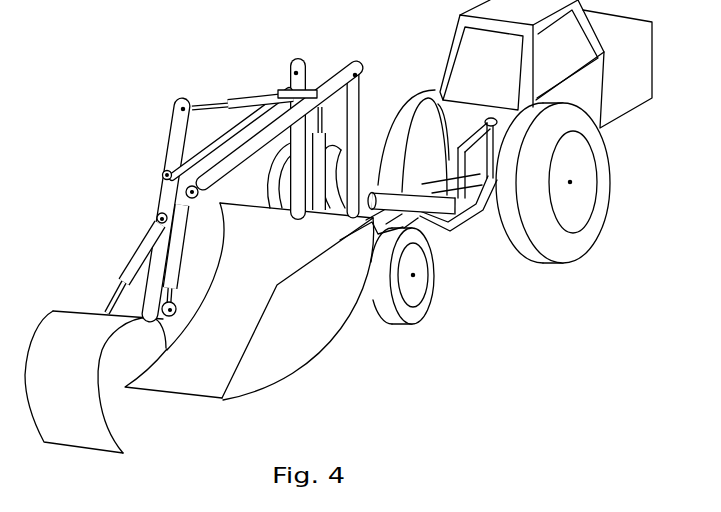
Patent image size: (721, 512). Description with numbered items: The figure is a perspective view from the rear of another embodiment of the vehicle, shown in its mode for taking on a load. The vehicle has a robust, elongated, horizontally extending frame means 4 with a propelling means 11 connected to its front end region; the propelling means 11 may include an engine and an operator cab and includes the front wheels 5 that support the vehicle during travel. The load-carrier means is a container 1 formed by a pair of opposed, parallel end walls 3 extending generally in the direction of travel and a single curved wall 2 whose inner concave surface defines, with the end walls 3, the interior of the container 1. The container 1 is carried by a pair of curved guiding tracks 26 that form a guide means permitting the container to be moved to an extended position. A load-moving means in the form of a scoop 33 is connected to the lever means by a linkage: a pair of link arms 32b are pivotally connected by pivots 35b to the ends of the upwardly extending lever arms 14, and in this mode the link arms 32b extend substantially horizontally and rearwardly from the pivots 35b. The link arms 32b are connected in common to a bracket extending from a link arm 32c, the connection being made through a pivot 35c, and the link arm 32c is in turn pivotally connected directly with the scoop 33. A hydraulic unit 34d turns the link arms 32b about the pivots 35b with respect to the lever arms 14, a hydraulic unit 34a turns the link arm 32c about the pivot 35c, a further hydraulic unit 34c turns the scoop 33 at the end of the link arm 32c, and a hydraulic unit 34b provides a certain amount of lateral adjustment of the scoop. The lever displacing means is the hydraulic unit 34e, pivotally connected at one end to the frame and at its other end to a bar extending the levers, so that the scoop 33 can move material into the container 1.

The container 1 is at (315, 317).
The curved wall 2 is at (185, 388).
The end walls 3 is at (213, 252).
The frame means 4 is at (455, 225).
The front wheels 5 is at (565, 250).
The propelling means 11 is at (622, 92).
The lever arms 14 is at (353, 92).
The curved guiding tracks 26 is at (276, 185).
The link arms 32b is at (273, 83).
The link arm 32c is at (177, 137).
The scoop 33 is at (70, 318).
The hydraulic unit 34a is at (248, 100).
The hydraulic unit 34b is at (182, 218).
The hydraulic unit 34c is at (143, 252).
The hydraulic unit 34d is at (317, 197).
The hydraulic unit 34e is at (427, 207).
The pivots 35b is at (297, 73).
The pivot 35c is at (164, 171).